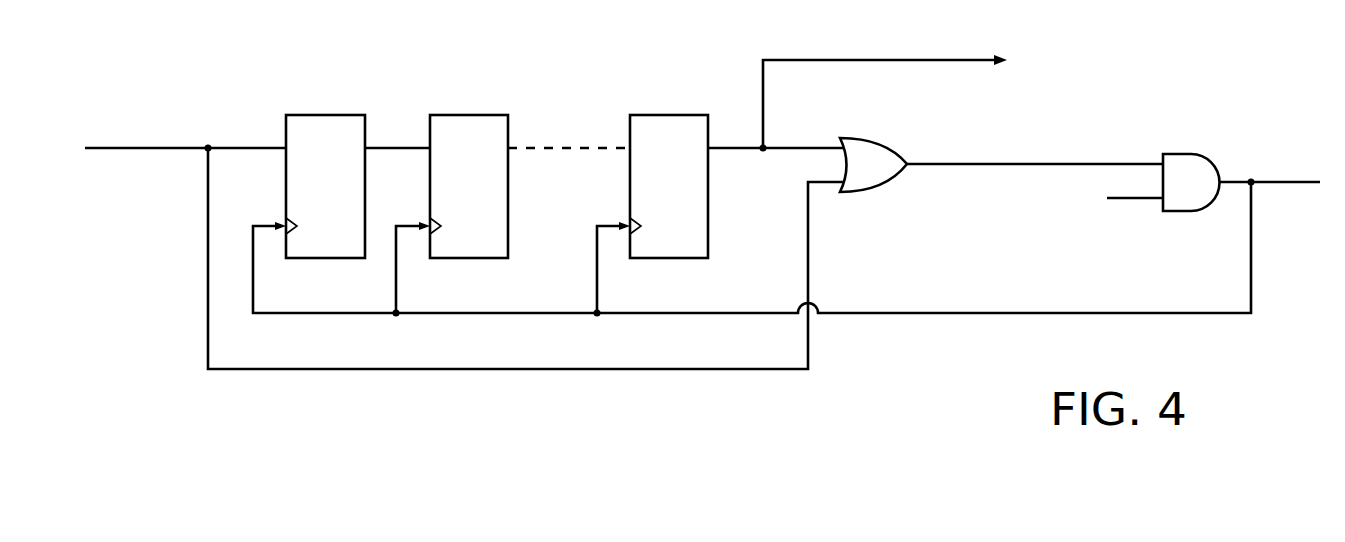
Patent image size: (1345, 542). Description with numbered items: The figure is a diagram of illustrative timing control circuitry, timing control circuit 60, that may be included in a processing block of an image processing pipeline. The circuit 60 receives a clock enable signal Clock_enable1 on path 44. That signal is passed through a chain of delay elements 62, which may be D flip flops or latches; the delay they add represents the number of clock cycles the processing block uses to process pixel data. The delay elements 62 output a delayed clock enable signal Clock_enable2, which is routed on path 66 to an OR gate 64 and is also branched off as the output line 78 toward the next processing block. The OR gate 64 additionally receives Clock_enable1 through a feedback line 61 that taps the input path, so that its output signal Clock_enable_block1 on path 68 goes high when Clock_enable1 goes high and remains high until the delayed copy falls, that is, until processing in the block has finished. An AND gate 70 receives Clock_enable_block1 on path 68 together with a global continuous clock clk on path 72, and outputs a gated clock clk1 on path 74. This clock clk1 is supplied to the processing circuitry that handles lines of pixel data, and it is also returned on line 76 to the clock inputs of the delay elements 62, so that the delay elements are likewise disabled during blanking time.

The timing control circuit 60 is at (1168, 37).
The path 44 is at (155, 150).
The delay elements 62 is at (340, 198).
The path 66 is at (738, 150).
The CLOCK_ENABLE2 output signal 78 is at (883, 62).
The feedback line 61 is at (809, 226).
The OR gate 64 is at (880, 178).
The path 68 is at (993, 166).
The AND gate 70 is at (1200, 165).
The path 72 is at (1138, 200).
The path 74 is at (1292, 185).
The CLK1 feedback line 76 is at (992, 316).